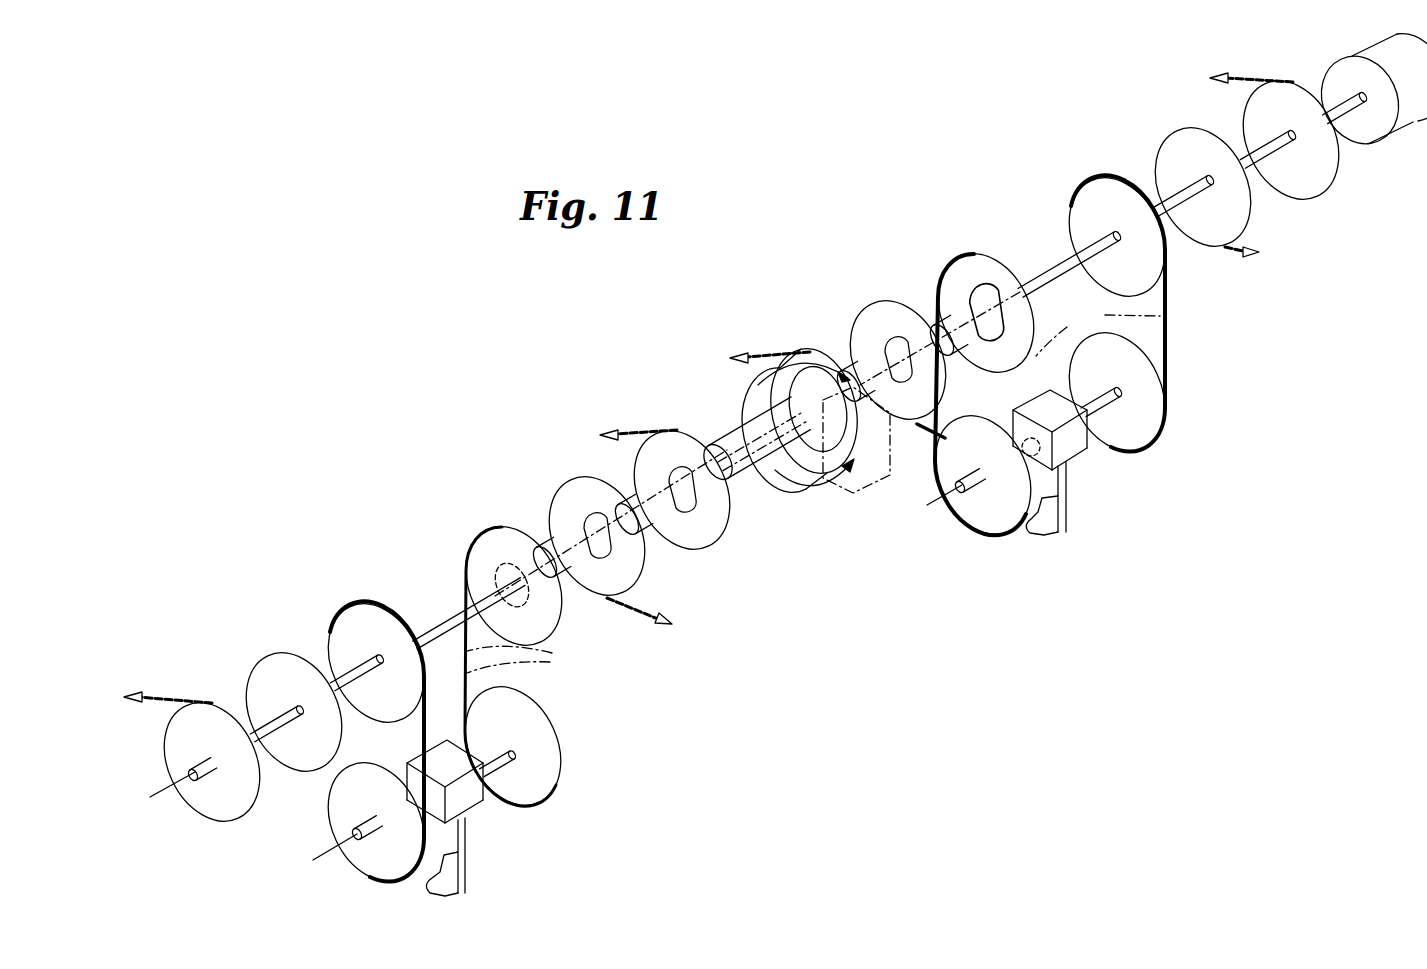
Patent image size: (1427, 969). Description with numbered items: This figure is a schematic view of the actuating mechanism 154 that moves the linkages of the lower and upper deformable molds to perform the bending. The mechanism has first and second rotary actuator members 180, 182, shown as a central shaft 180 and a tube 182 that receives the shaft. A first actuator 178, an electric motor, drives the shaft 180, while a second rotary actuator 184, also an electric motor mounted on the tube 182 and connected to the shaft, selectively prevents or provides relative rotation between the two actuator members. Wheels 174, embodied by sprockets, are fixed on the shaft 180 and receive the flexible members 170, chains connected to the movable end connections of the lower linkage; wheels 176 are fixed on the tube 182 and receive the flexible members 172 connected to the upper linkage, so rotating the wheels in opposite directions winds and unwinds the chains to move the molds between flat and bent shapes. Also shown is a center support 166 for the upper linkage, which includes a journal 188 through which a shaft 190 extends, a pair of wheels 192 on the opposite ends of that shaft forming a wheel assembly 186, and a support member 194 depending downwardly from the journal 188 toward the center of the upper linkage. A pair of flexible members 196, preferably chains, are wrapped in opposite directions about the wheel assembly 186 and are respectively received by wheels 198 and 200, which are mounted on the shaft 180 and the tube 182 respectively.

The actuating mechanism 154 is at (885, 247).
The center support 166 is at (569, 758).
The flexible member 170 is at (180, 690).
The flexible member 172 is at (655, 428).
The wheel 174 is at (253, 792).
The wheel 176 is at (582, 487).
The first actuator 178 is at (1410, 113).
The first rotary actuator member 180 is at (1053, 270).
The second rotary actuator member 182 is at (745, 467).
The second rotary actuator 184 is at (838, 483).
The wheel assembly 186 is at (562, 733).
The journal 188 is at (468, 798).
The shaft 190 is at (532, 780).
The wheel 192 is at (363, 853).
The support member 194 is at (450, 868).
The flexible member 196 is at (812, 487).
The wheel 198 is at (365, 620).
The wheel 200 is at (480, 540).